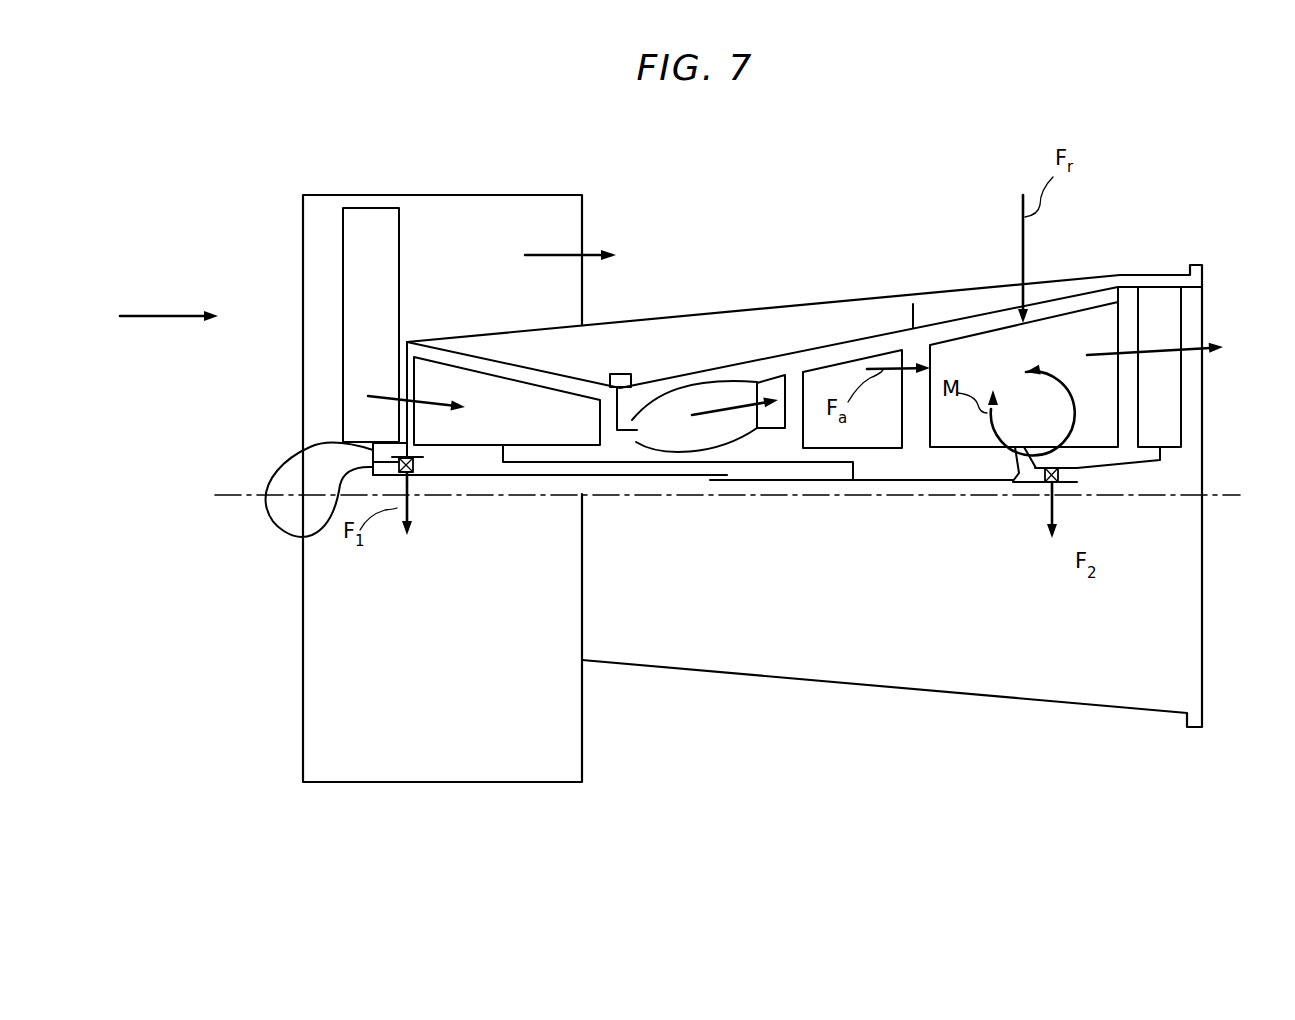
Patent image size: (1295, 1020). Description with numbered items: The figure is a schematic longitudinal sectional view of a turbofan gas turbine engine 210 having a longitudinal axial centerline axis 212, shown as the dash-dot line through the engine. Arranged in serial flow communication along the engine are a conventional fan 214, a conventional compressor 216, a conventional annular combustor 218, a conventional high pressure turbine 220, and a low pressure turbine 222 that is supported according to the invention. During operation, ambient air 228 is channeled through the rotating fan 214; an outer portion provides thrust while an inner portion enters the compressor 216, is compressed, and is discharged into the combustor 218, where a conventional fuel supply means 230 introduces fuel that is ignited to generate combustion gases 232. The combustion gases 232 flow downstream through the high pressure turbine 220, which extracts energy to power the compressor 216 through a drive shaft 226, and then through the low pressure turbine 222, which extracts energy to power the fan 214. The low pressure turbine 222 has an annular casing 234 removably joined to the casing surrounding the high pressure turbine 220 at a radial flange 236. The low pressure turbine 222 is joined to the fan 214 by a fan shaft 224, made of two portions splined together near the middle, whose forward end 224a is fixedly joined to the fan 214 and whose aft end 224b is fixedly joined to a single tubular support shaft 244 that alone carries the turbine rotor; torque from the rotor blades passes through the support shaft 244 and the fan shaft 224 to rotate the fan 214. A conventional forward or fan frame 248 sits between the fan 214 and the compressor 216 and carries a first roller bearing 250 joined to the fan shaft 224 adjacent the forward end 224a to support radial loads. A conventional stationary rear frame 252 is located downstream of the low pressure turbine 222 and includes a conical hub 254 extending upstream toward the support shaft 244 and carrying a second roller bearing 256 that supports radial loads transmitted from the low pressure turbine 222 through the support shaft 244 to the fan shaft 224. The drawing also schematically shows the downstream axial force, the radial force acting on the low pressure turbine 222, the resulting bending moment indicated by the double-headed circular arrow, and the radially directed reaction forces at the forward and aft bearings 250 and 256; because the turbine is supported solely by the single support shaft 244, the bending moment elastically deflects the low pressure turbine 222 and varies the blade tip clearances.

The turbofan gas turbine engine 210 is at (561, 178).
The longitudinal axial centerline axis 212 is at (1217, 497).
The fan 214 is at (403, 289).
The compressor 216 is at (473, 446).
The annular combustor 218 is at (733, 445).
The high pressure turbine 220 is at (882, 450).
The low pressure turbine 222 is at (1055, 335).
The fan shaft 224 is at (918, 497).
The forward end of fan shaft 224a is at (442, 476).
The aft end of fan shaft 224b is at (1020, 483).
The drive shaft 226 is at (615, 463).
The ambient air 228 is at (155, 306).
The fuel supply means 230 is at (620, 375).
The combustion gases 232 is at (720, 407).
The annular casing 234 is at (978, 318).
The radial flange 236 is at (912, 318).
The support shaft 244 is at (1020, 470).
The fan frame 248 is at (307, 457).
The first roller bearing 250 is at (303, 543).
The rear frame 252 is at (1187, 315).
The conical hub 254 is at (1120, 462).
The second roller bearing 256 is at (1060, 473).